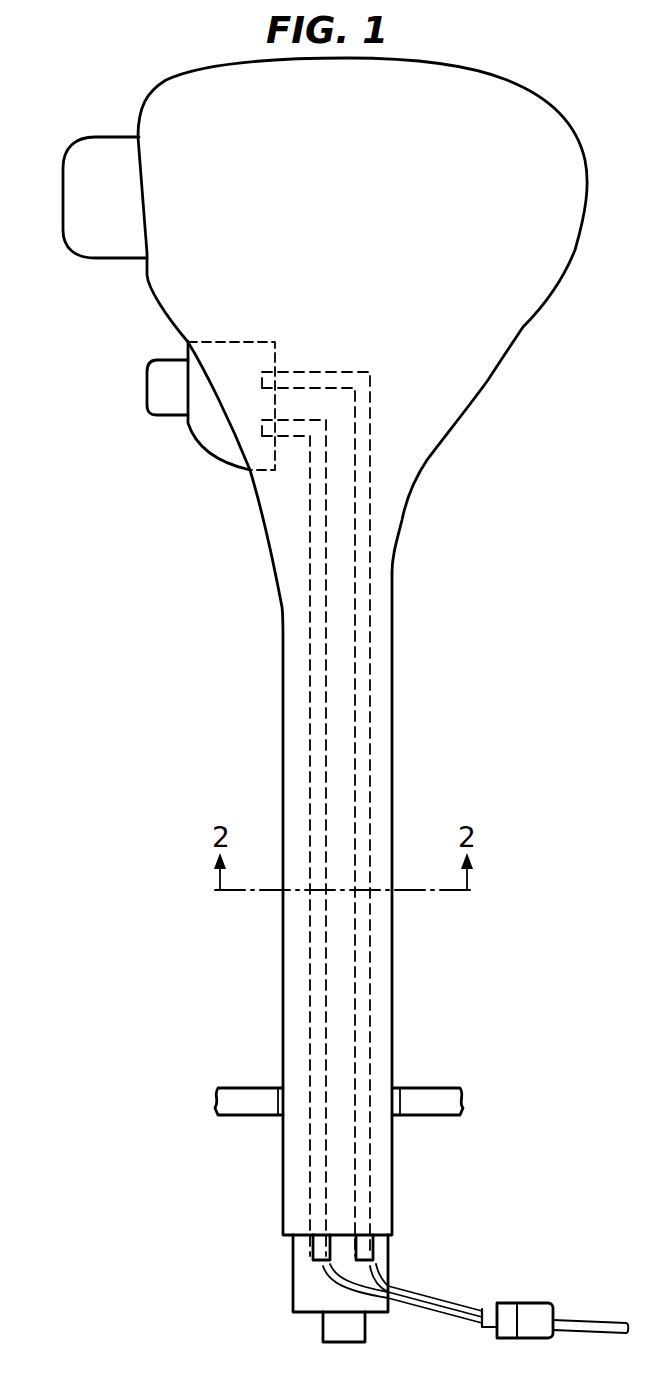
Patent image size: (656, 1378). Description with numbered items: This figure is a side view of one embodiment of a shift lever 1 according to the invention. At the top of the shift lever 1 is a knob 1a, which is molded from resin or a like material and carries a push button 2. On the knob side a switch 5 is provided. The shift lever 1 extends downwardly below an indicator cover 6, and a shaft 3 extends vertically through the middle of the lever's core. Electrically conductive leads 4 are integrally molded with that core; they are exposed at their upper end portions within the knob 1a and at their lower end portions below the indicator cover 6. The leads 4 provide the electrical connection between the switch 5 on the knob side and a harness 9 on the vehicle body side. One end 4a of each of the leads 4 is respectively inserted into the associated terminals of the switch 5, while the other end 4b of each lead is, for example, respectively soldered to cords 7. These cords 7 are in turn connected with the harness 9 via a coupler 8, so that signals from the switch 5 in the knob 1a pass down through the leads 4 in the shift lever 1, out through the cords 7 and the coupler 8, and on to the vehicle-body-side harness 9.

The shift lever 1 is at (392, 694).
The knob 1a is at (520, 327).
The push button 2 is at (100, 141).
The shaft 3 is at (323, 1321).
The electrically conductive leads 4 is at (325, 586).
The one end of each lead 4a is at (262, 428).
The other end of each lead 4b is at (313, 1244).
The switch 5 is at (147, 400).
The indicator cover 6 is at (440, 1089).
The cords 7 is at (428, 1297).
The coupler 8 is at (553, 1297).
The harness 9 is at (603, 1319).